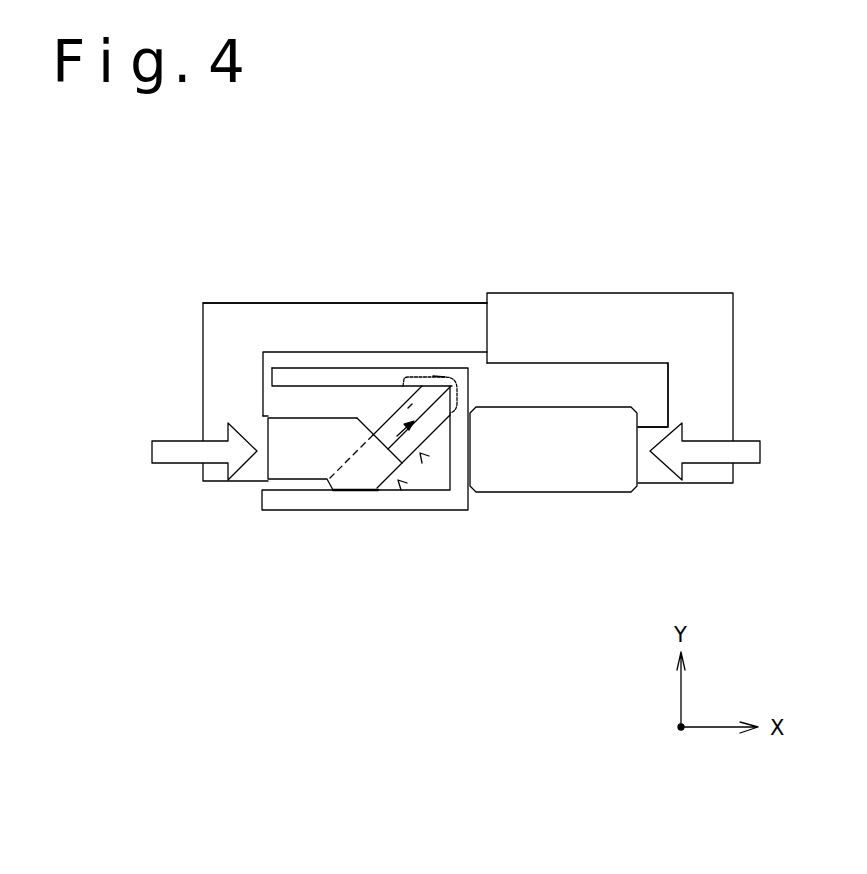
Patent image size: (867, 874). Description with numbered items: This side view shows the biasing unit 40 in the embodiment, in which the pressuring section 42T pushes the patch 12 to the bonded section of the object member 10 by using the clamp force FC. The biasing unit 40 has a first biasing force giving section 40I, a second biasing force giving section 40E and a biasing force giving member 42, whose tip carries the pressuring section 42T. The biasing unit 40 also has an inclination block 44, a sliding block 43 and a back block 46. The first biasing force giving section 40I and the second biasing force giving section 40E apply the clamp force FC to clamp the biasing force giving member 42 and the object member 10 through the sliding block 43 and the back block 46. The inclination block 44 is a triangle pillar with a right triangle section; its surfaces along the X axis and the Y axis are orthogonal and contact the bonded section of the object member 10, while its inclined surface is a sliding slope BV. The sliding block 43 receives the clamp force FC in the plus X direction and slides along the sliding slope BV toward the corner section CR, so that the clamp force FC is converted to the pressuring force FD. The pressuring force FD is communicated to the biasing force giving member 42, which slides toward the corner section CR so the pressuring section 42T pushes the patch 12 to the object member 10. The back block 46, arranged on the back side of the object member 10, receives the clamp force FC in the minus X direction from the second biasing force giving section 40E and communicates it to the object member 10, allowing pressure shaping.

The biasing unit 40 is at (643, 237).
The first biasing force giving section 40I is at (467, 313).
The second biasing force giving section 40E is at (508, 297).
The object member 10 is at (282, 498).
The sliding block 43 is at (313, 456).
The biasing force giving member 42 is at (392, 432).
The pressuring section 42T is at (417, 377).
The patch 12 is at (433, 376).
The corner section CR is at (408, 408).
The pressuring force FD is at (357, 418).
The inclination block 44 is at (440, 452).
The sliding slope BV is at (420, 453).
The back block 46 is at (570, 462).
The clamp force FC is at (454, 451).